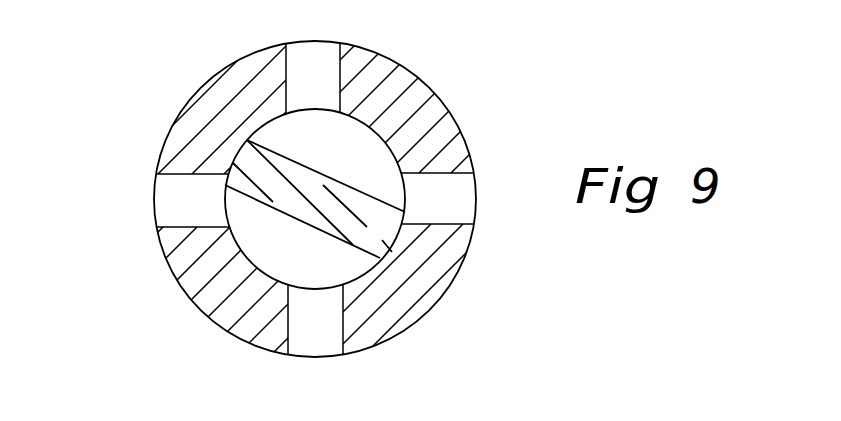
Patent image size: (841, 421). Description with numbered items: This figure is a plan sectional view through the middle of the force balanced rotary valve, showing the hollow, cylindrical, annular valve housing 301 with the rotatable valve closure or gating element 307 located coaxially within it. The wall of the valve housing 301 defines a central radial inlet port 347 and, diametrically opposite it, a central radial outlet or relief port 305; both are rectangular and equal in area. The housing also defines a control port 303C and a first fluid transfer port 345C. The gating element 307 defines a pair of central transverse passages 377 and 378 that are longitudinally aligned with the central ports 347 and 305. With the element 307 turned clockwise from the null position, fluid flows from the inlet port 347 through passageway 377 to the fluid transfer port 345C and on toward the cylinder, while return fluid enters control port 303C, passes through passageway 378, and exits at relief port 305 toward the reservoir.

The valve housing 301 is at (416, 334).
The control port 303C is at (317, 335).
The central radial outlet port 305 is at (183, 198).
The valve closure element 307 is at (390, 151).
The first fluid transfer port 345C is at (305, 65).
The central radial inlet port 347 is at (495, 169).
The central passage 377 is at (357, 165).
The central passage 378 is at (315, 264).